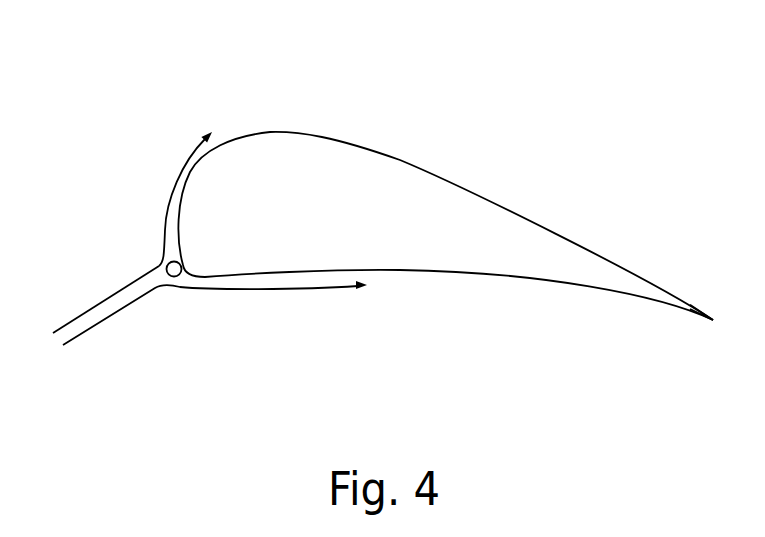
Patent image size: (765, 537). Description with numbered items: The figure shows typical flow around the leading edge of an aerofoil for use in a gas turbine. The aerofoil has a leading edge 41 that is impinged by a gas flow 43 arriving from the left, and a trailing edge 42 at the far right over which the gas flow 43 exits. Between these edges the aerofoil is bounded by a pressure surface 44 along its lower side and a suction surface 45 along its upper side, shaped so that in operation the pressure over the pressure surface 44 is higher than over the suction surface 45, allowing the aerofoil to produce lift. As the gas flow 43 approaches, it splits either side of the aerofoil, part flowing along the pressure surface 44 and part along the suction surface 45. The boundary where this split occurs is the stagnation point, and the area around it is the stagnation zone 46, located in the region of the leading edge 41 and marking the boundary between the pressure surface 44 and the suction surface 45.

The leading edge 41 is at (168, 182).
The trailing edge 42 is at (637, 267).
The gas flow 43 is at (82, 315).
The pressure surface 44 is at (417, 280).
The suction surface 45 is at (332, 135).
The stagnation zone 46 is at (165, 262).